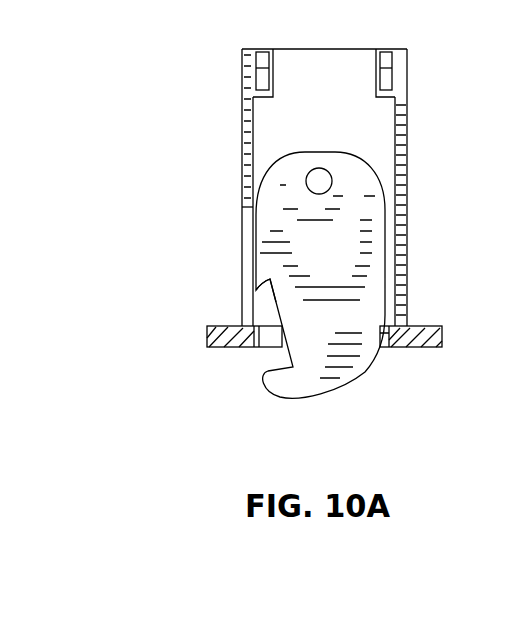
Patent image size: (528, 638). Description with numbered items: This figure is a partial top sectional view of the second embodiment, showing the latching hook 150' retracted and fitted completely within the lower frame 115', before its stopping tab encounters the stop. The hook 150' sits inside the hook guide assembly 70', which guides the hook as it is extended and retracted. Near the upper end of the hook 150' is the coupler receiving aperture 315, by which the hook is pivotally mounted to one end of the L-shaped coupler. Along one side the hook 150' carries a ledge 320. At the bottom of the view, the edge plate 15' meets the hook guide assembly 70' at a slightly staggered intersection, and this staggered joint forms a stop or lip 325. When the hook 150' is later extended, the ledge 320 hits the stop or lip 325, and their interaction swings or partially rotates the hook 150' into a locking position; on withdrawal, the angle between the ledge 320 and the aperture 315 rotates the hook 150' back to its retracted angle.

The hook guide assembly 70' is at (254, 188).
The lower frame 115' is at (455, 187).
The hook 150' is at (326, 256).
The coupler receiving aperture 315 is at (329, 182).
The ledge 320 is at (261, 284).
The stop or lip 325 is at (262, 340).
The edge plate 15' is at (364, 310).